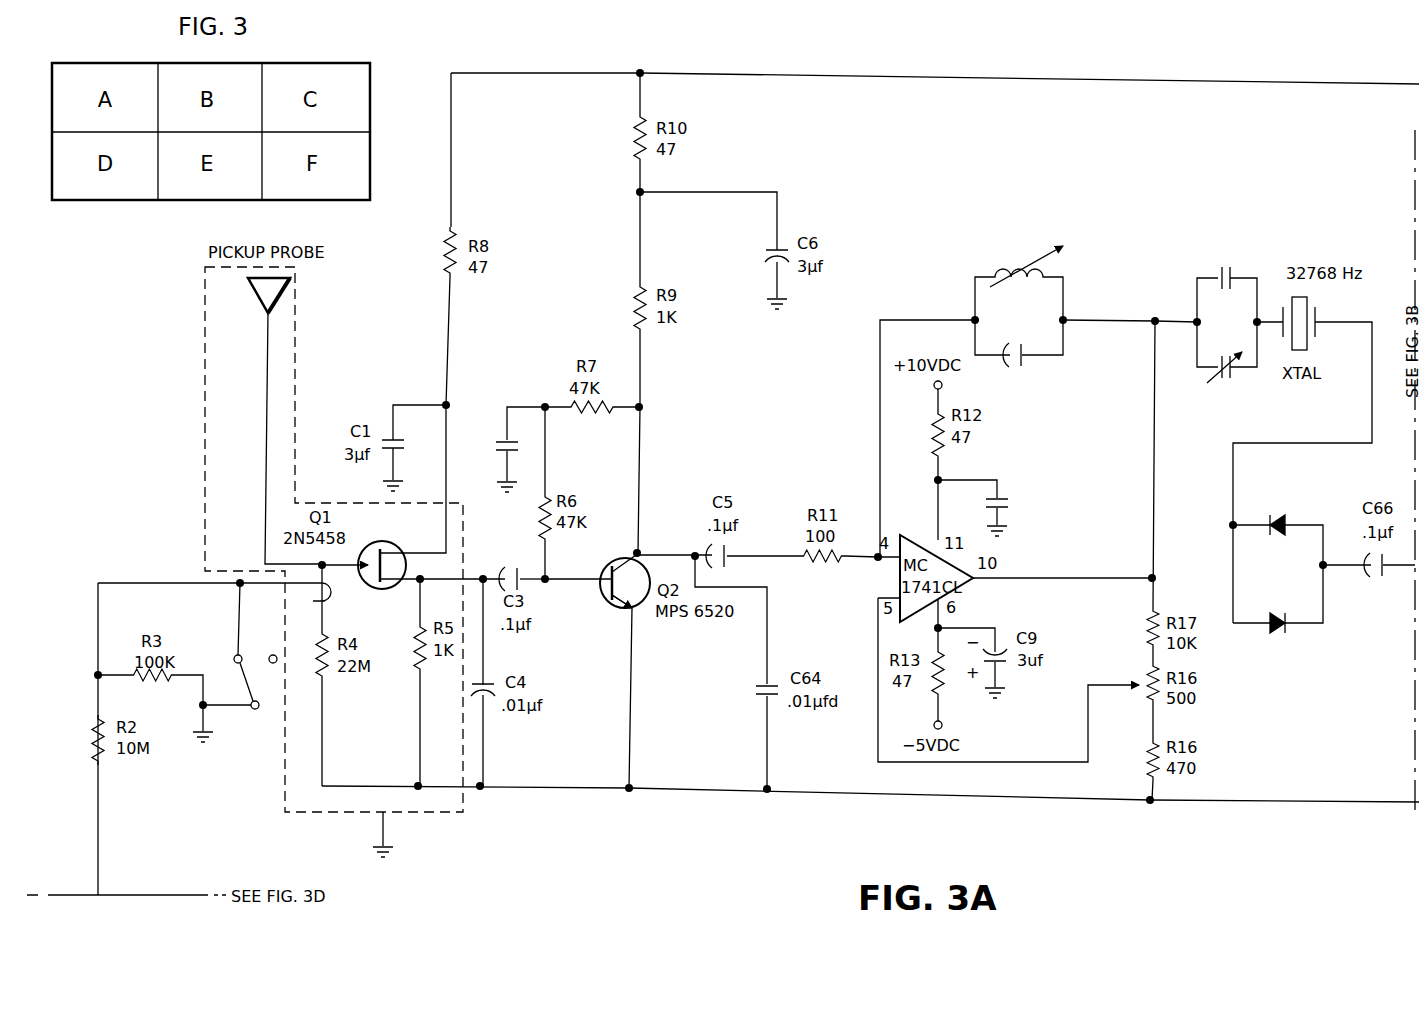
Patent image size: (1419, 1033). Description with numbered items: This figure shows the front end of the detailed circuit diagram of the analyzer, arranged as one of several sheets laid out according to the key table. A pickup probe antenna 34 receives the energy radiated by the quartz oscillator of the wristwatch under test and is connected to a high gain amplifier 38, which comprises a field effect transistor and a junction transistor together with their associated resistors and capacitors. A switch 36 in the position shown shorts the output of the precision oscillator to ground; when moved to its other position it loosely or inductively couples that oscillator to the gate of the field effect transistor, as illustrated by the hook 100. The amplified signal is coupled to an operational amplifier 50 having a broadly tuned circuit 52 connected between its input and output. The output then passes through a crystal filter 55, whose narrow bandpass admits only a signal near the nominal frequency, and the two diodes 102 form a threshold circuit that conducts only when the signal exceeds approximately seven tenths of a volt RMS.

The antenna 34 is at (258, 292).
The switch 36 is at (232, 684).
The high gain amplifier 38 is at (500, 386).
The operational amplifier 50 is at (1004, 471).
The tuned circuit 52 is at (1078, 300).
The crystal filter 55 is at (1184, 288).
The hook 100 is at (333, 592).
The diodes 102 is at (1228, 518).